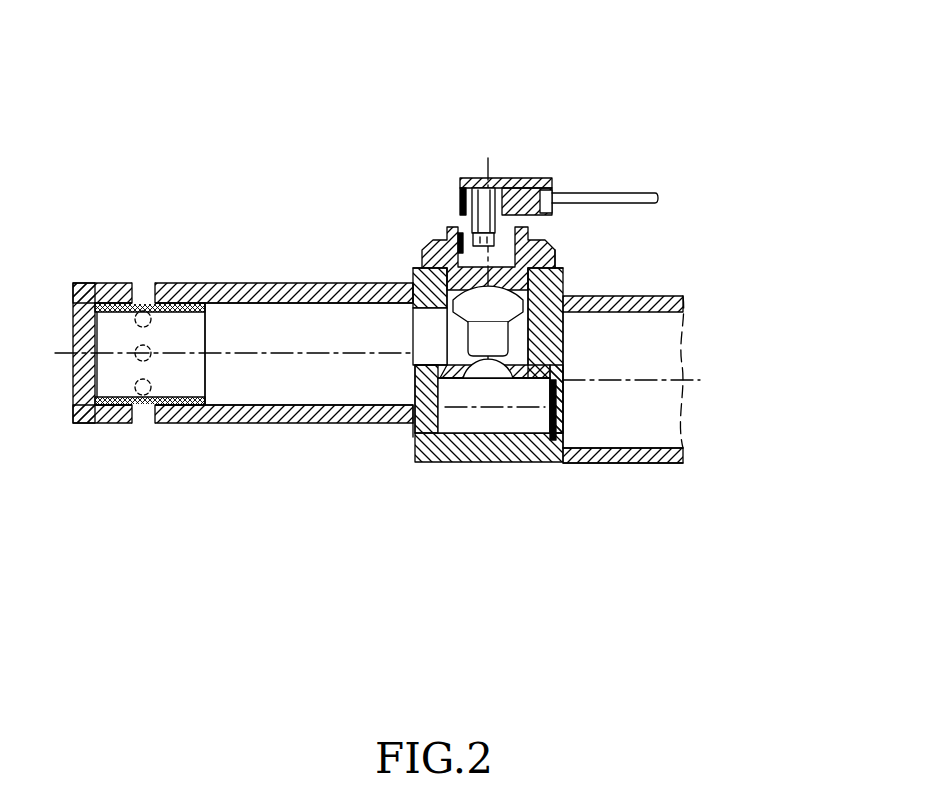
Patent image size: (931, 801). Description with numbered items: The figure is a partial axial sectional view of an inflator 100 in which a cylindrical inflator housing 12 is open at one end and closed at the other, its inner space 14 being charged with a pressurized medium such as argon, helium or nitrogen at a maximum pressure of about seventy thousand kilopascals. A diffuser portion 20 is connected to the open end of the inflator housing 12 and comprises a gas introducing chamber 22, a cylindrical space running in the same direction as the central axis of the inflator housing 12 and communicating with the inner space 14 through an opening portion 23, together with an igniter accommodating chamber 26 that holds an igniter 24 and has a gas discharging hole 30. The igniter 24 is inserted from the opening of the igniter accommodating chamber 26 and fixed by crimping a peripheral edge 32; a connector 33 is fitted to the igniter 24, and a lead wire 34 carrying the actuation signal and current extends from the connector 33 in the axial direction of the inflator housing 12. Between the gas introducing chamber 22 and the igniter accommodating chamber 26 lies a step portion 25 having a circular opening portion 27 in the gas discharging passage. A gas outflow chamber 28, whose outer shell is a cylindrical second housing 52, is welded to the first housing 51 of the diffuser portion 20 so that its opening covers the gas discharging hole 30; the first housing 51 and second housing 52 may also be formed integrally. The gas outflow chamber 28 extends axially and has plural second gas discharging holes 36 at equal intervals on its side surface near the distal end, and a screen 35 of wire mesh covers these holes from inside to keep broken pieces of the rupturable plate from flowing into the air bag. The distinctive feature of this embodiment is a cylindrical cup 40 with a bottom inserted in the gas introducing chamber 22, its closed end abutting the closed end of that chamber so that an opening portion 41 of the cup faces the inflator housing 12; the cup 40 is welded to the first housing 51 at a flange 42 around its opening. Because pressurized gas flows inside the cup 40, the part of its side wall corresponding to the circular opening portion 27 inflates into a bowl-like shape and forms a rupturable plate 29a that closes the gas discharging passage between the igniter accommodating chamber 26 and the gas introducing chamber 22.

The inflator 100 is at (372, 466).
The diffuser portion 20 is at (465, 158).
The inflator housing 12 is at (652, 463).
The inner space 14 is at (657, 361).
The gas introducing chamber 22 is at (494, 405).
The opening portion 23 is at (575, 394).
The igniter 24 is at (421, 266).
The step portion 25 is at (537, 383).
The igniter accommodating chamber 26 is at (565, 268).
The circular opening portion 27 is at (425, 366).
The gas outflow chamber 28 is at (290, 346).
The outlet port 29a is at (565, 343).
The gas discharging hole 30 is at (425, 330).
The peripheral edge 32 is at (540, 212).
The connector 33 is at (500, 178).
The lead wire 34 is at (640, 193).
The screen 35 is at (198, 282).
The second gas discharging holes 36 is at (143, 283).
The cup 40 is at (467, 420).
The opening portion 41 is at (543, 437).
The flange 42 is at (565, 436).
The first housing 51 is at (568, 288).
The second housing 52 is at (290, 283).